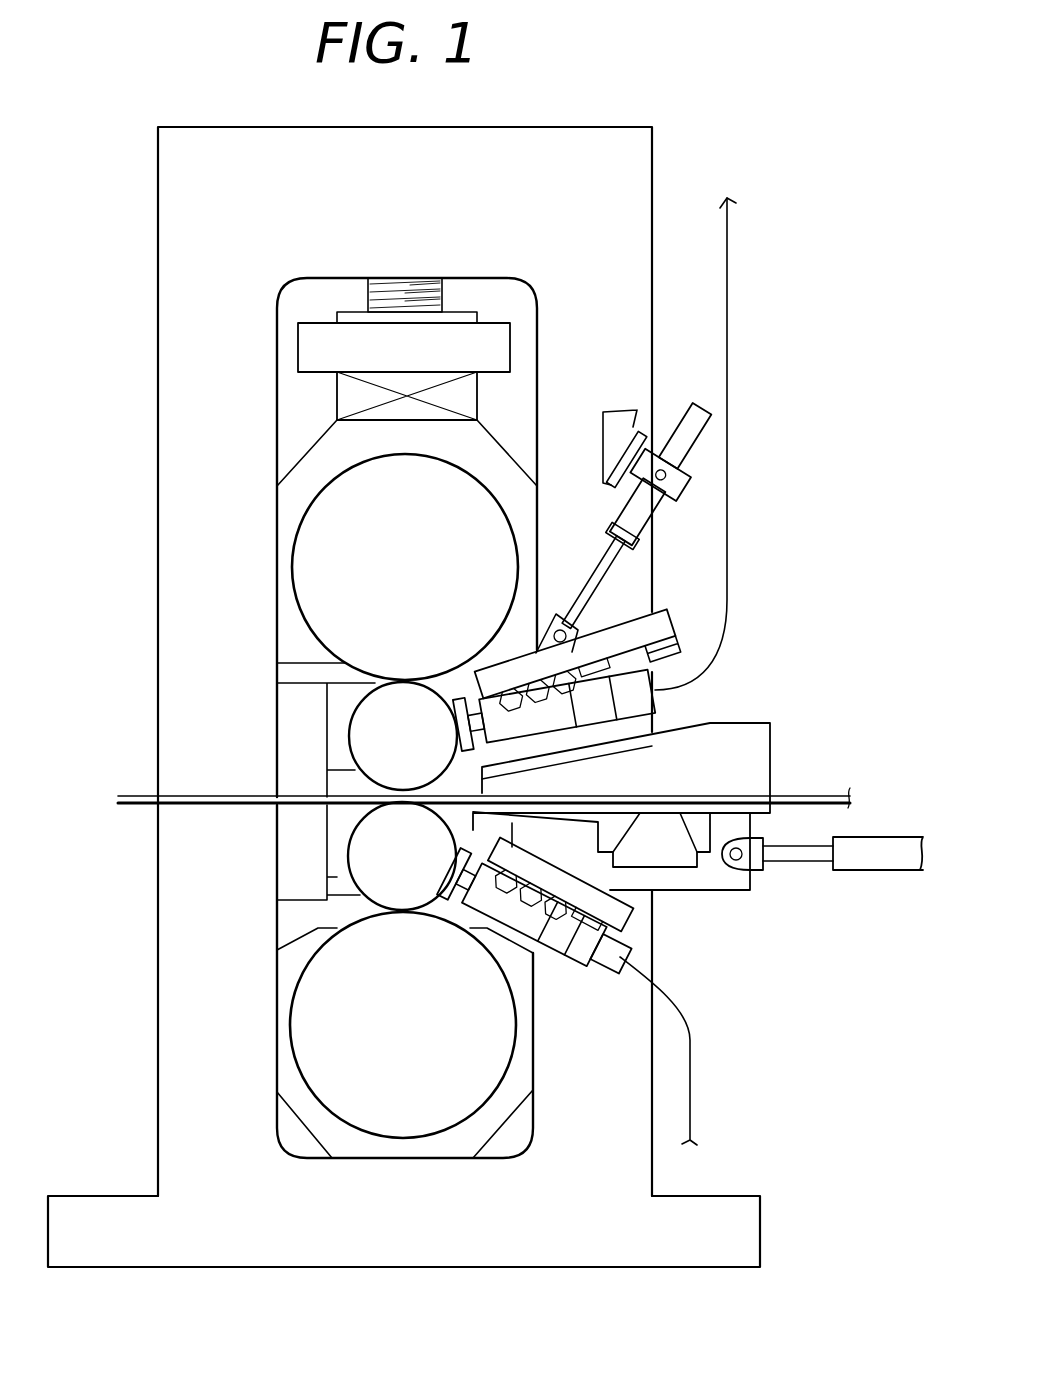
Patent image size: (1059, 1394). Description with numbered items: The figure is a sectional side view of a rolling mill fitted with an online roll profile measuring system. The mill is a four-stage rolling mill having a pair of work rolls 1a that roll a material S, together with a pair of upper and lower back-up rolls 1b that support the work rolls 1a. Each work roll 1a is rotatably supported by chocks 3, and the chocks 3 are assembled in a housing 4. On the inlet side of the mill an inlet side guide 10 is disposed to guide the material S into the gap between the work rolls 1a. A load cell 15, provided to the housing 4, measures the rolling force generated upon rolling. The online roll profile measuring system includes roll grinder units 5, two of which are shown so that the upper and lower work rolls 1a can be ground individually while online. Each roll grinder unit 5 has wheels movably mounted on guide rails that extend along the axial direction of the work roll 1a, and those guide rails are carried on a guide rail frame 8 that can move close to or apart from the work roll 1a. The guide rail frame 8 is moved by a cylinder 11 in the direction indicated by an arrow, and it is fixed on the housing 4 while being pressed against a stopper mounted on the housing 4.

The housing 4 is at (172, 308).
The load cell 15 is at (345, 400).
The back-up rolls 1b is at (315, 556).
The work rolls 1a is at (360, 733).
The chocks 3 is at (335, 703).
The cylinder 11 is at (630, 512).
The guide rail frame 8 is at (666, 612).
The roll grinder unit 5 is at (555, 715).
The inlet side guide 10 is at (773, 746).
The material to be rolled S is at (810, 797).